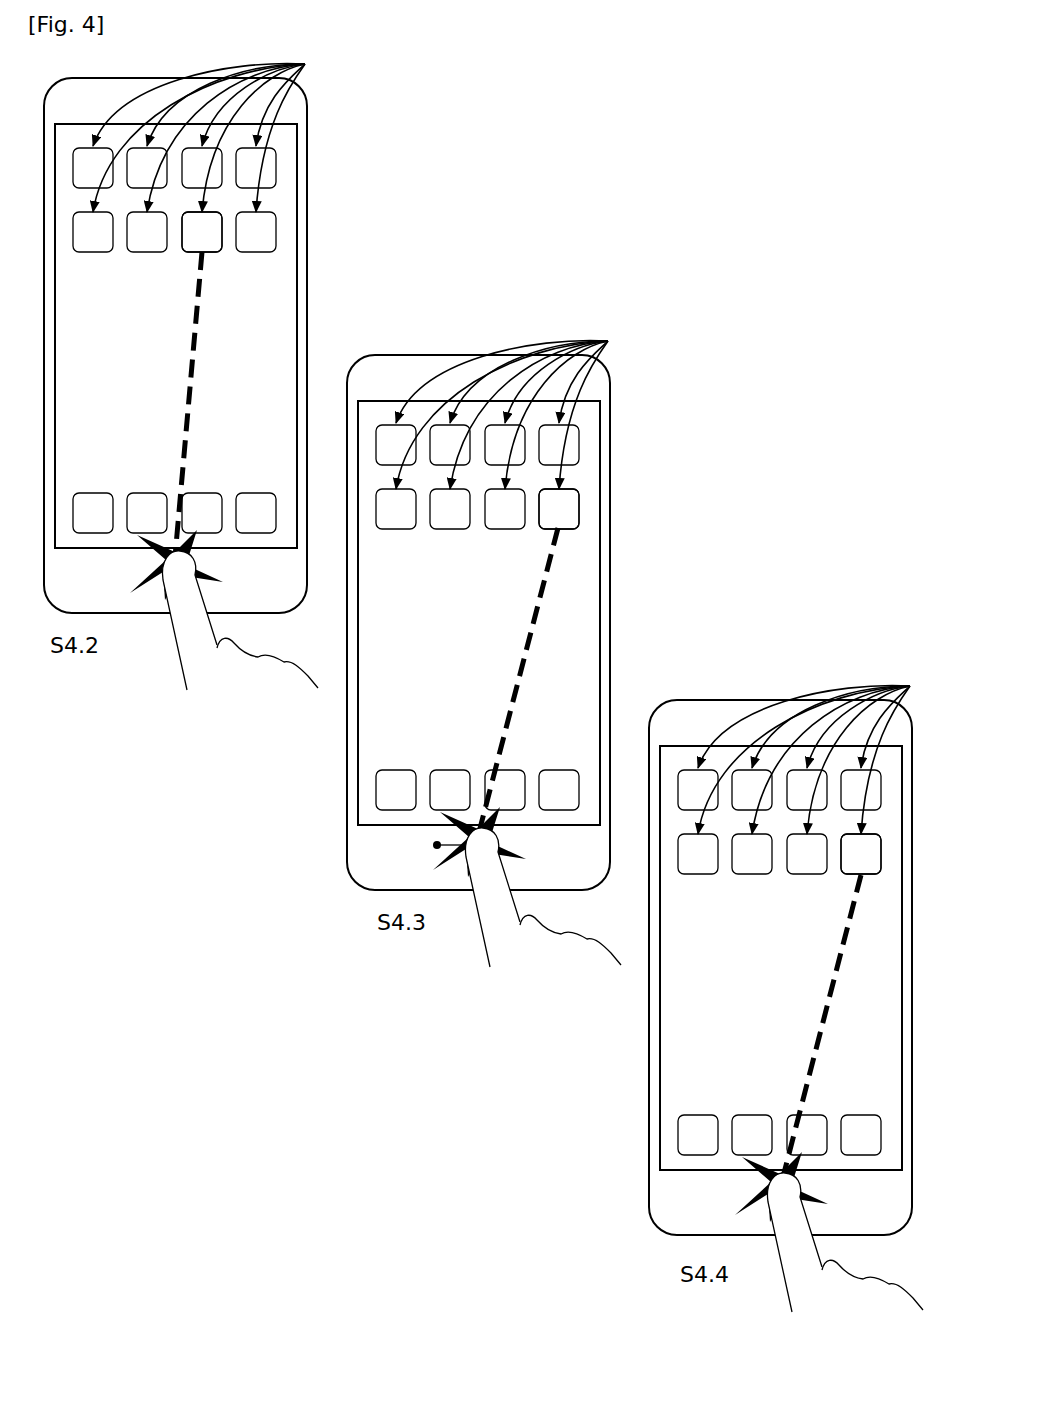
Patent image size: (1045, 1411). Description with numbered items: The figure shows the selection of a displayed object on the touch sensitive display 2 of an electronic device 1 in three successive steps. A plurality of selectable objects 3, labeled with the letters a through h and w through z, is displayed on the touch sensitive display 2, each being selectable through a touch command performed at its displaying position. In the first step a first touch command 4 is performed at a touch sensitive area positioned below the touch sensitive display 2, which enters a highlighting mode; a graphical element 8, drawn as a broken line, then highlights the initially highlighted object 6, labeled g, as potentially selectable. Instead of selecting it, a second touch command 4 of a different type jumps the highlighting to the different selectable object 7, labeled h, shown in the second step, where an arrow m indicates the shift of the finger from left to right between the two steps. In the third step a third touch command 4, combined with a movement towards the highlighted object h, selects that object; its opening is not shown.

The electronic device 1 is at (869, 684).
The touch sensitive display 2 is at (683, 1085).
The selectable object 3 is at (505, 604).
The touch command 4 is at (140, 596).
The selected icon 6 is at (225, 232).
The target icon 7 is at (582, 505).
The graphical element 8 is at (201, 346).
The arrow m is at (470, 830).